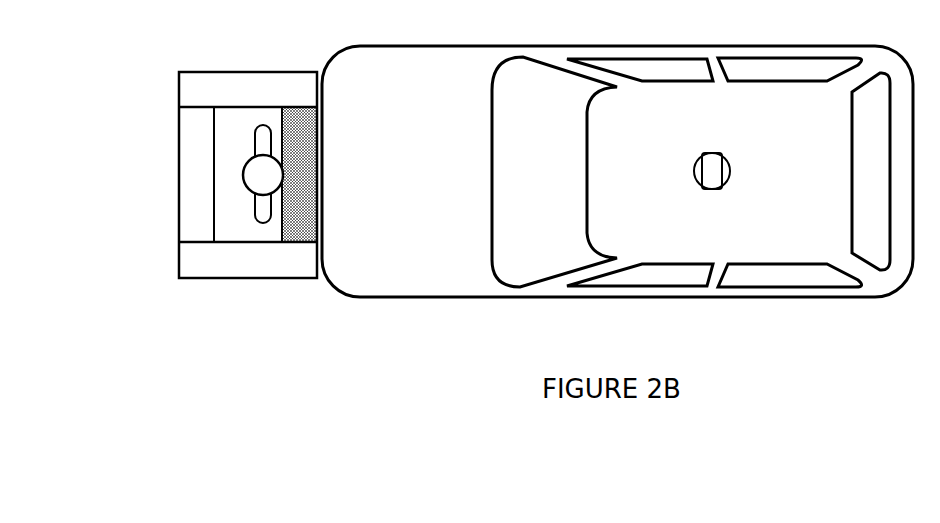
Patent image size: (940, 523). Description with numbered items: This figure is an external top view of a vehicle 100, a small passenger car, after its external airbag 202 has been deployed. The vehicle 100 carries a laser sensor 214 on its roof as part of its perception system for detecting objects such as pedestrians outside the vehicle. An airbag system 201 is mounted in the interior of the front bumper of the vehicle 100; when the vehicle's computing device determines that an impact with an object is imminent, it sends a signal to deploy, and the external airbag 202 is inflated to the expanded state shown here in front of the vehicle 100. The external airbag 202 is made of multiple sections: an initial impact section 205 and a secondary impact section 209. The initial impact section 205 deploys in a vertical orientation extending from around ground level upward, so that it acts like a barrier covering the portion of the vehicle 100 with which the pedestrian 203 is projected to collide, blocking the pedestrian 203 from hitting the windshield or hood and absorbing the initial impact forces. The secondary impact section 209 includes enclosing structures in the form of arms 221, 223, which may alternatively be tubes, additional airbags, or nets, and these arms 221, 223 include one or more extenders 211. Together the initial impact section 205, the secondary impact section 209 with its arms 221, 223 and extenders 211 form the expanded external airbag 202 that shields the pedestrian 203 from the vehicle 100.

The vehicle 100 is at (643, 298).
The laser sensor 214 is at (714, 192).
The airbag system 201 is at (249, 165).
The external airbag 202 is at (198, 196).
The pedestrian 203 is at (263, 124).
The initial impact section 205 is at (280, 224).
The secondary impact section 209 is at (178, 155).
The extender 211 is at (200, 128).
The arm 221 is at (247, 260).
The arm 223 is at (247, 92).